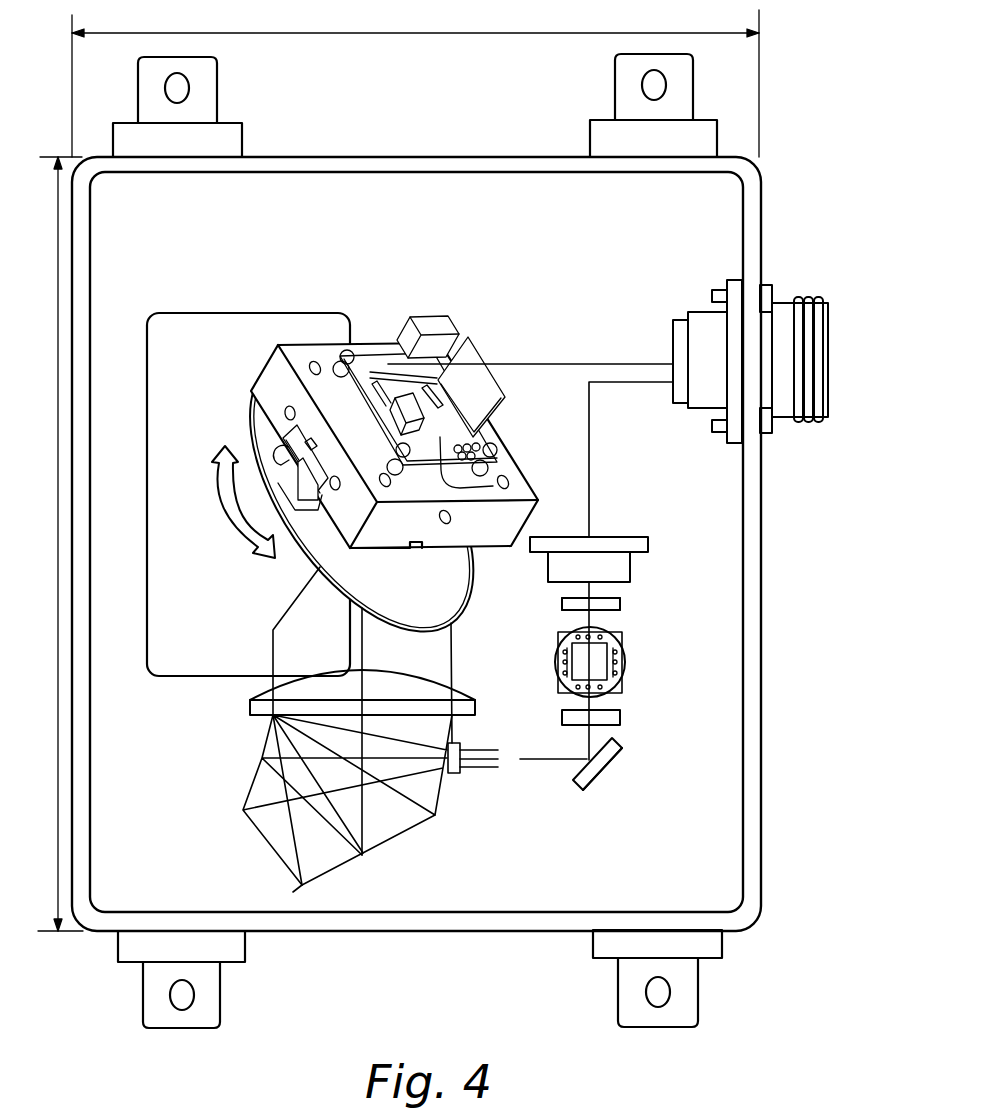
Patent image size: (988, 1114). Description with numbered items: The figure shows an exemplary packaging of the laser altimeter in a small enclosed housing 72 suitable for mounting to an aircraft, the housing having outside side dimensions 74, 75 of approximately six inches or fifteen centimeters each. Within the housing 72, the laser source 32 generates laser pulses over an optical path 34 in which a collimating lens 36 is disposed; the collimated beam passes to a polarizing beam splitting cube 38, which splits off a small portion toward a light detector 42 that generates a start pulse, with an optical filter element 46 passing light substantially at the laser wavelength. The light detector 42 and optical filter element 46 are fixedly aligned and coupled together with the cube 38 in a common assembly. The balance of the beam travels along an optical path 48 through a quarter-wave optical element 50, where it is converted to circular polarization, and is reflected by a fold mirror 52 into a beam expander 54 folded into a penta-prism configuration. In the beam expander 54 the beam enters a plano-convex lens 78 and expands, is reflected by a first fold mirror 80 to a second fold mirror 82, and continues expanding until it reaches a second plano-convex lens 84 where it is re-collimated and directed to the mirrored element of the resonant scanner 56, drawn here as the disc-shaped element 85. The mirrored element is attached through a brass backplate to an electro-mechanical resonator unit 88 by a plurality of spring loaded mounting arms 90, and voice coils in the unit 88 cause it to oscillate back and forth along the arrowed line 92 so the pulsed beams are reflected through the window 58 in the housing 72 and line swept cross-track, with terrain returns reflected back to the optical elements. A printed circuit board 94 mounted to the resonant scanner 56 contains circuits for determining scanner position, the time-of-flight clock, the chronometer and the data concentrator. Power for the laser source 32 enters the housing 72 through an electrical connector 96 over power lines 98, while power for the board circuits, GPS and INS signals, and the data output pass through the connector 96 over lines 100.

The laser source 32 is at (620, 527).
The optical path 34 is at (587, 617).
The collimating lens 36 is at (636, 602).
The polarizing beam splitting cube 38 is at (633, 670).
The light detector 42 is at (647, 681).
The optical filter element 46 is at (645, 688).
The optical path 48 is at (587, 743).
The quarter-wave optical element 50 is at (634, 734).
The fold mirror 52 is at (620, 781).
The beam expander 54 is at (428, 852).
The resonant scanner 56 is at (389, 426).
The window 58 is at (197, 597).
The enclosed housing 72 is at (765, 636).
The outside side dimension 74 is at (415, 80).
The enclosure height 75 is at (55, 544).
The plano-convex lens 78 is at (453, 773).
The first fold mirror 80 is at (250, 787).
The second fold mirror 82 is at (337, 870).
The plano-convex lens 84 is at (250, 705).
The disc 85 is at (463, 612).
The electro-mechanical resonator unit 88 is at (267, 370).
The spring loaded mounting arms 90 is at (303, 500).
The arrowed line 92 is at (220, 510).
The printed circuit board 94 is at (500, 478).
The electrical connector 96 is at (818, 300).
The power lines 98 is at (588, 418).
The lines 100 is at (546, 362).